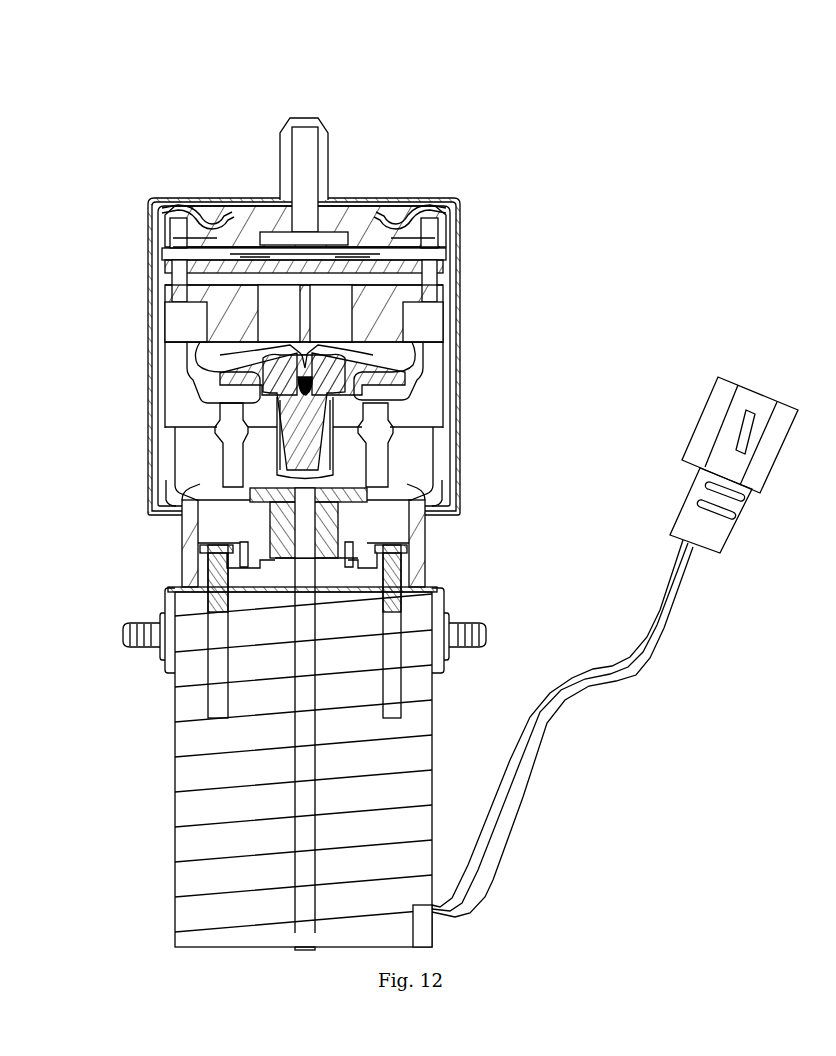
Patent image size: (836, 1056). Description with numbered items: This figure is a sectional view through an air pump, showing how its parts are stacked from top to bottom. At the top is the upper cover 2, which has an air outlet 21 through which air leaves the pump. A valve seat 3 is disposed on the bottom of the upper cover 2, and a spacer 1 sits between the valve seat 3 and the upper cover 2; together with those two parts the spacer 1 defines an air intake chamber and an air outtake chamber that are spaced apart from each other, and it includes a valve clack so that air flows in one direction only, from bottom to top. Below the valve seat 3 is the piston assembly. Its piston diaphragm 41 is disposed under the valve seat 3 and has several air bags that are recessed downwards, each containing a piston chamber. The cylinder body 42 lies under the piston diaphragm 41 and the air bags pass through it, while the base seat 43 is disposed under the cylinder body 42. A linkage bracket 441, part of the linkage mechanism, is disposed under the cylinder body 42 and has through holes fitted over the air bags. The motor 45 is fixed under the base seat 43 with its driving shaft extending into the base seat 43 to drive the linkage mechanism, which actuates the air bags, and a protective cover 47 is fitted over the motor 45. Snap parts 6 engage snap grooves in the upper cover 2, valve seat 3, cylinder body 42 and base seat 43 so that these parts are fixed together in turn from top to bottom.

The spacer 1 is at (217, 257).
The upper cover 2 is at (362, 205).
The air outlet 21 is at (325, 150).
The valve seat 3 is at (192, 287).
The snap part 6 is at (458, 310).
The piston diaphragm 41 is at (205, 380).
The cylinder body 42 is at (442, 392).
The linkage bracket 441 is at (292, 428).
The base seat 43 is at (270, 542).
The motor 45 is at (200, 747).
The protective cover 47 is at (177, 655).